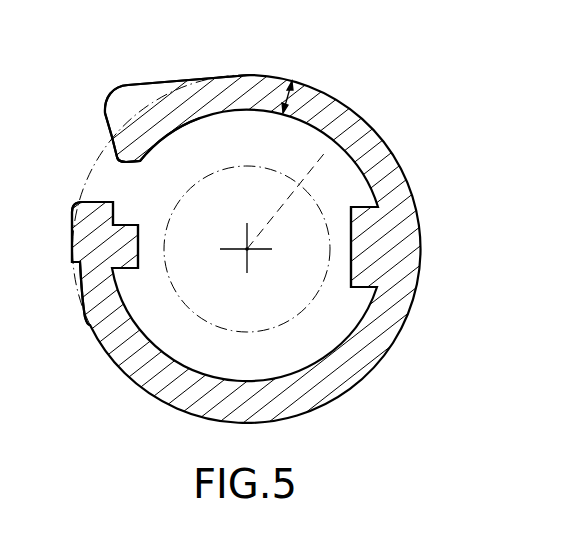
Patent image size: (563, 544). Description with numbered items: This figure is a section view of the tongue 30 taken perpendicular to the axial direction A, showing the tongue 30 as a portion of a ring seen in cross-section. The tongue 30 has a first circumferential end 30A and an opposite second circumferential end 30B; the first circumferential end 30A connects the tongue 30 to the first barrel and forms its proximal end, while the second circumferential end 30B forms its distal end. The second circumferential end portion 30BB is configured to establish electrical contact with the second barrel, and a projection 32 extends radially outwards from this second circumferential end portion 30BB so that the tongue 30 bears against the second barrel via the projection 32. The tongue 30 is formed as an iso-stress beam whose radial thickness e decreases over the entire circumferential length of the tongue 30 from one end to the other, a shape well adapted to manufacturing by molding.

The tongue 30 is at (243, 78).
The first circumferential end 30A is at (350, 127).
The second circumferential end 30B is at (112, 166).
The second circumferential end portion 30BB is at (163, 125).
The projection 32 is at (122, 99).
The radial thickness e is at (292, 100).
The axial direction A is at (246, 251).